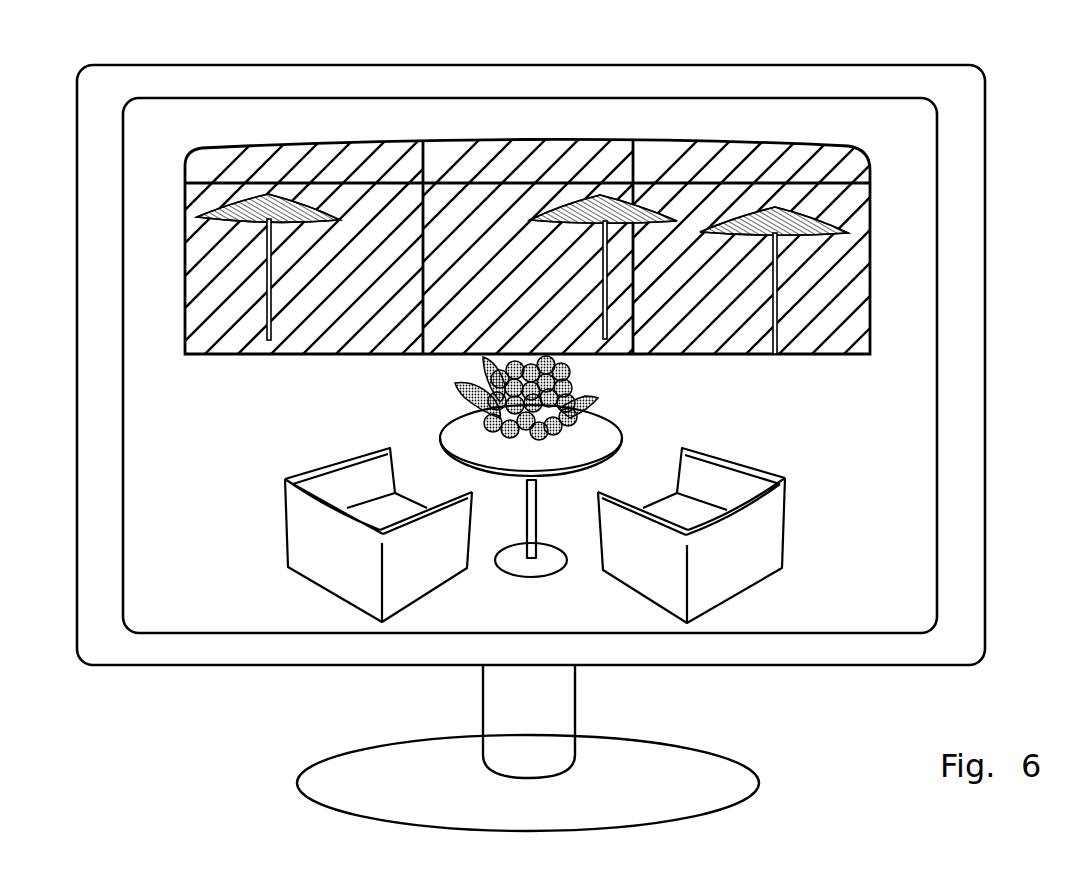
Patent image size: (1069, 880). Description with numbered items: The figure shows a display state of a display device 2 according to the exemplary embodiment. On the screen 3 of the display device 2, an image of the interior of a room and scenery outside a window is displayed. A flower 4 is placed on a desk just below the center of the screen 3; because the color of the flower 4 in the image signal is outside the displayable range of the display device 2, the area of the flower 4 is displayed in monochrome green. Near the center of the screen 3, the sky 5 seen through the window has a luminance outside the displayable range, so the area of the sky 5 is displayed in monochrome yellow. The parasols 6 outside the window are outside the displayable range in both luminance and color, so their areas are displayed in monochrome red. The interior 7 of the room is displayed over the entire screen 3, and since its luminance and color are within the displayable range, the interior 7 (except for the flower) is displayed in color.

The display device 2 is at (985, 310).
The screen 3 is at (937, 228).
The flower 4 is at (565, 385).
The sky 5 is at (756, 160).
The parasols 6 is at (288, 198).
The interior of the room 7 is at (915, 468).